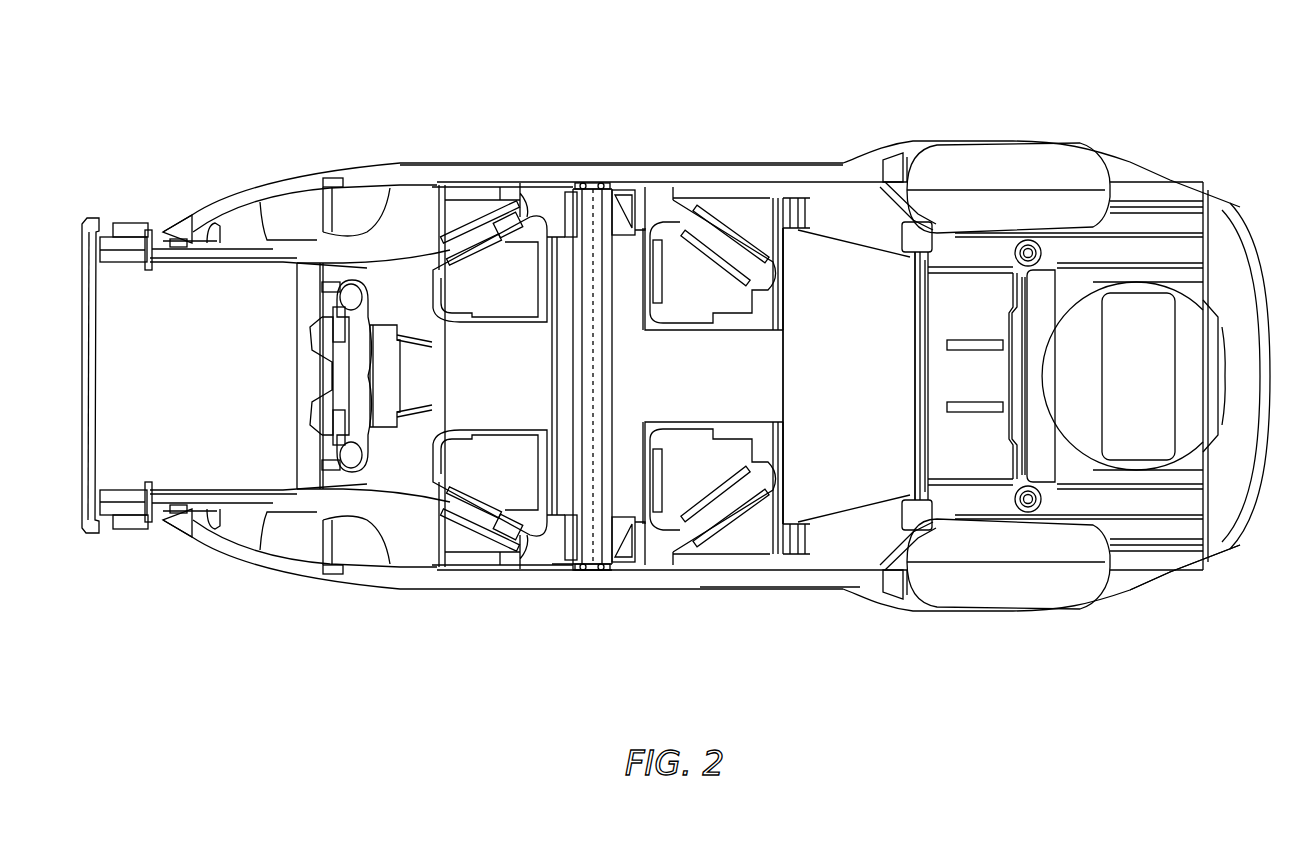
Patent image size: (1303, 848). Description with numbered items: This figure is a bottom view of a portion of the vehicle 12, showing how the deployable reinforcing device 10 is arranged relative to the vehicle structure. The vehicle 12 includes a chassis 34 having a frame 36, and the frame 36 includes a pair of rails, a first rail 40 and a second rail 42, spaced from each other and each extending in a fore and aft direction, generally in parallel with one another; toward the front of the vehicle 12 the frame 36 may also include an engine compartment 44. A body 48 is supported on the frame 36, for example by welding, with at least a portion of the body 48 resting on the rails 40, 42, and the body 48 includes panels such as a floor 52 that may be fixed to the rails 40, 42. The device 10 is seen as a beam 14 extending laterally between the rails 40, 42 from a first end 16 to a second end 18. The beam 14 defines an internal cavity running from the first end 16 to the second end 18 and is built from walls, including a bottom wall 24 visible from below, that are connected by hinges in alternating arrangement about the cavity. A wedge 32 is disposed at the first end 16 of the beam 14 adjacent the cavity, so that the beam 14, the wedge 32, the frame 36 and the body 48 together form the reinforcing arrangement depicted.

The deployable reinforcing device 10 is at (572, 570).
The vehicle 12 is at (803, 66).
The beam 14 is at (616, 268).
The first end 16 is at (620, 570).
The second end 18 is at (570, 190).
The bottom wall 24 is at (600, 370).
The wedge 32 is at (600, 184).
The chassis 34 is at (722, 596).
The frame 36 is at (492, 589).
The first rail 40 is at (700, 170).
The second rail 42 is at (770, 578).
The engine compartment 44 is at (133, 553).
The body 48 is at (1010, 141).
The floor 52 is at (856, 378).